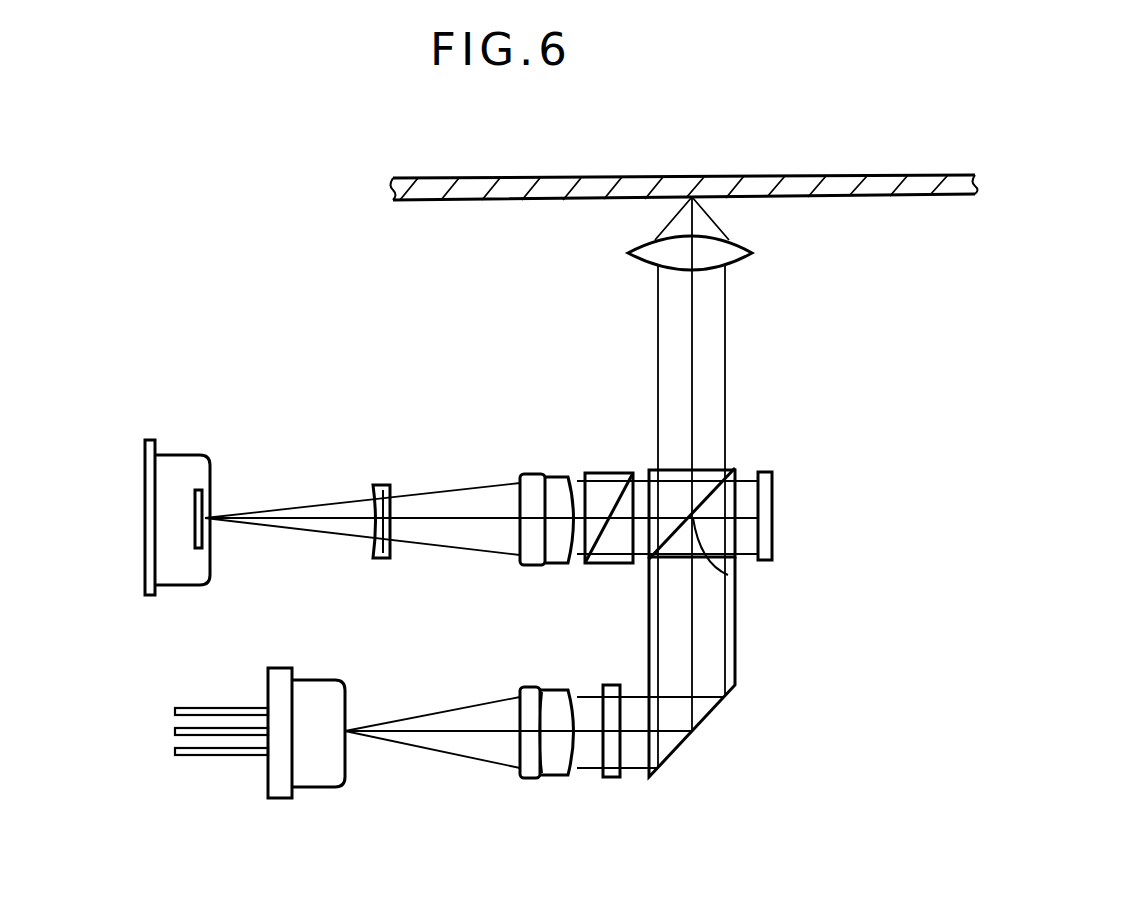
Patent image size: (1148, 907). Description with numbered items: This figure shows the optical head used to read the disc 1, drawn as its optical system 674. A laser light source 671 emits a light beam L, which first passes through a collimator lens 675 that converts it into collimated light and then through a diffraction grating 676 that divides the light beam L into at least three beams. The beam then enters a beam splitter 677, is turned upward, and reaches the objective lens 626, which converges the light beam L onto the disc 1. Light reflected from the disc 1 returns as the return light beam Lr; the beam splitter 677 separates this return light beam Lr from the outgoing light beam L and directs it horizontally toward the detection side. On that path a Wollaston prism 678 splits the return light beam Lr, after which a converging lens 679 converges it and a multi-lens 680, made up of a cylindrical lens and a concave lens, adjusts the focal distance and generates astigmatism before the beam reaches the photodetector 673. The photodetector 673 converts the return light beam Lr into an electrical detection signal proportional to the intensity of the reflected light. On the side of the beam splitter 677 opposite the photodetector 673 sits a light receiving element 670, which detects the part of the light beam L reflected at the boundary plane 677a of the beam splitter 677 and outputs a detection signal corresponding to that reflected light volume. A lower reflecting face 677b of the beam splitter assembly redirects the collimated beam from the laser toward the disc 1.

The disc 1 is at (809, 176).
The objective lens 626 is at (750, 256).
The optical system 674 is at (744, 397).
The photodetector 673 is at (204, 455).
The multi-lens 680 is at (387, 484).
The converging lens 679 is at (532, 474).
The Wollaston prism 678 is at (603, 473).
The beam splitter 677 is at (713, 469).
The boundary plane 677a is at (728, 575).
The reflecting prism 677b is at (718, 704).
The light receiving element 670 is at (773, 502).
The light source 671 is at (339, 680).
The collimator lens 675 is at (539, 757).
The diffraction grating 676 is at (613, 780).
The return light beam Lr is at (468, 489).
The light beam L is at (445, 711).